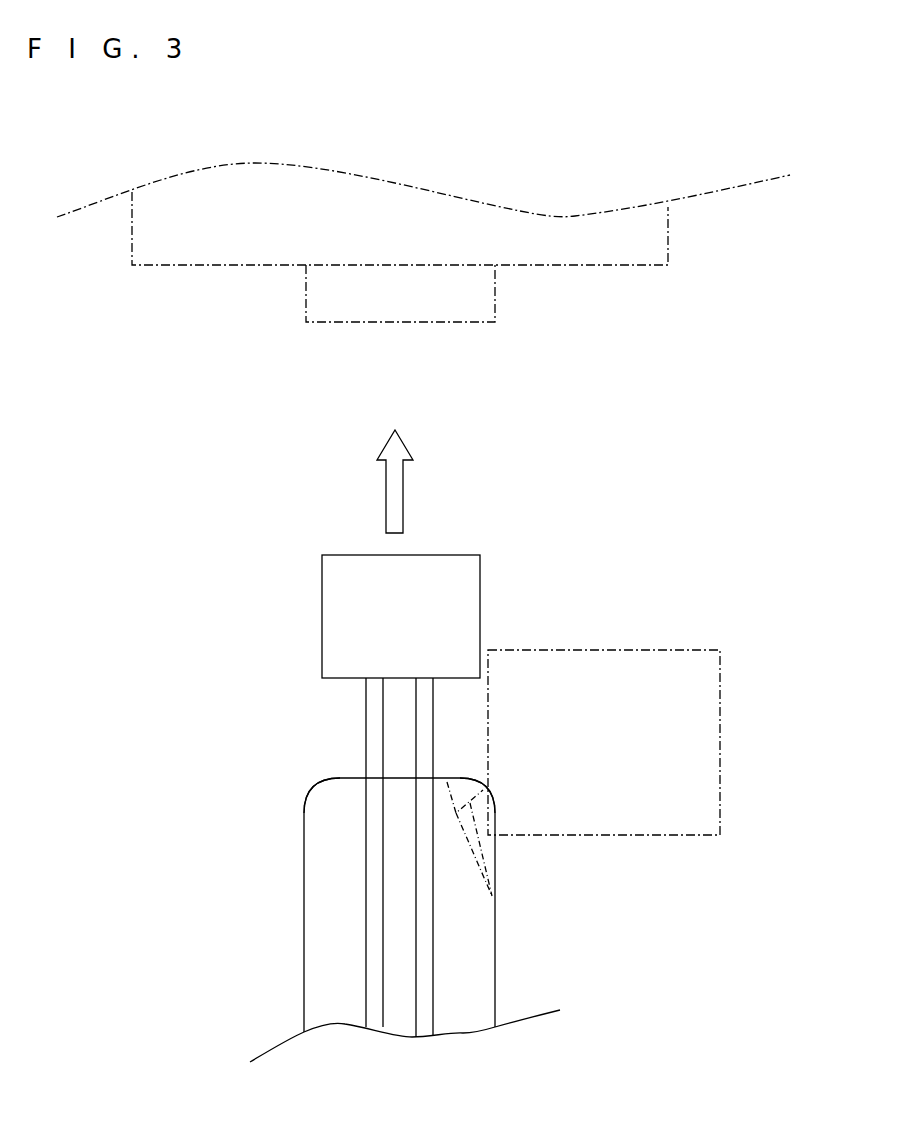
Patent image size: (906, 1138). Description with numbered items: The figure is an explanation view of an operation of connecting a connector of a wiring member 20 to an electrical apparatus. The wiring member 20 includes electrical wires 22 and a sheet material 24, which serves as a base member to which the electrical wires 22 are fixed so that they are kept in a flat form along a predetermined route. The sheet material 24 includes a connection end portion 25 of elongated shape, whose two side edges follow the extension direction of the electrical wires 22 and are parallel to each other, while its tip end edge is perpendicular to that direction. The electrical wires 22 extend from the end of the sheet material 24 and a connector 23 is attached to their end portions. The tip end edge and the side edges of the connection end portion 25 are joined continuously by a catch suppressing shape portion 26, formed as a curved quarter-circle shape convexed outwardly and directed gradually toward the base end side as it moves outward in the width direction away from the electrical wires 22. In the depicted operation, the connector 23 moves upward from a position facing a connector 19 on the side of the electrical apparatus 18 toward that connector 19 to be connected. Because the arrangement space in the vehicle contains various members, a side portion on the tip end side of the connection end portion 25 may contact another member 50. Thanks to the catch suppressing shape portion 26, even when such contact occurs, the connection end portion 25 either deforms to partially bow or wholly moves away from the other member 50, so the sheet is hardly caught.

The electrical apparatus 18 is at (668, 237).
The connector 19 is at (495, 292).
The wiring member 20 is at (414, 884).
The electrical wire 22 is at (415, 929).
The connector 23 is at (480, 605).
The sheet material 24 is at (464, 1016).
The connection end portion 25 is at (497, 913).
The catch suppressing shape portion 26 is at (316, 790).
The other member 50 is at (606, 648).